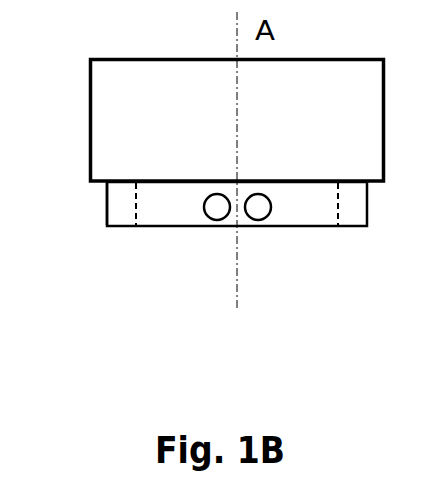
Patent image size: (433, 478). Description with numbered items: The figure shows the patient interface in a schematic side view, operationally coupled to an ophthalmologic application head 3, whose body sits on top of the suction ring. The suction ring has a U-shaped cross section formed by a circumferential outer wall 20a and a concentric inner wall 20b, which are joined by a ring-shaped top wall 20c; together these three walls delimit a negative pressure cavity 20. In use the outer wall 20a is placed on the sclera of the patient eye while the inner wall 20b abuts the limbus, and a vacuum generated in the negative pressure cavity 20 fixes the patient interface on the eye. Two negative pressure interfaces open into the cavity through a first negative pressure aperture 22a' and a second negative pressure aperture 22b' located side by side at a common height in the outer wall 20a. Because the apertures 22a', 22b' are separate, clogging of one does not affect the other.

The ophthalmologic application head 3 is at (343, 155).
The negative pressure cavity 20 is at (122, 213).
The outer wall 20a is at (107, 207).
The inner wall 20b is at (335, 203).
The ring-shaped top wall 20c is at (118, 181).
The first negative pressure aperture 22a' is at (196, 251).
The second negative pressure aperture 22b' is at (233, 282).